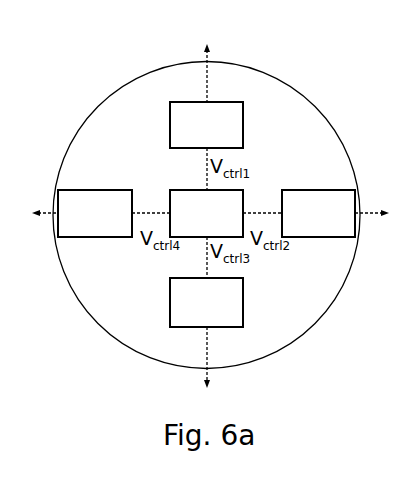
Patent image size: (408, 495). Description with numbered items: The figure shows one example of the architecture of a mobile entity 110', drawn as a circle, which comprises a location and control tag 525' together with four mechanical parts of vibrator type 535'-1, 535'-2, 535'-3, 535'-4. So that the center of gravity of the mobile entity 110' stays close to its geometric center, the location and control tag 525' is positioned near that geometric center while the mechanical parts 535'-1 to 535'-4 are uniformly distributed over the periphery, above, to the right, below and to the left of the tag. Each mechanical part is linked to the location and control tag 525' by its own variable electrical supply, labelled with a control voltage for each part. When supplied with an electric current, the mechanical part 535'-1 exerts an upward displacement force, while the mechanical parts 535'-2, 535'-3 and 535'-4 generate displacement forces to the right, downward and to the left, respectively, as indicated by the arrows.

The mobile entity 110' is at (208, 215).
The location and control tag 525' is at (206, 213).
The mechanical part of vibrator type 535'-1 is at (206, 125).
The mechanical part of vibrator type 535'-2 is at (318, 213).
The mechanical part of vibrator type 535'-3 is at (206, 302).
The mechanical part of vibrator type 535'-4 is at (95, 213).